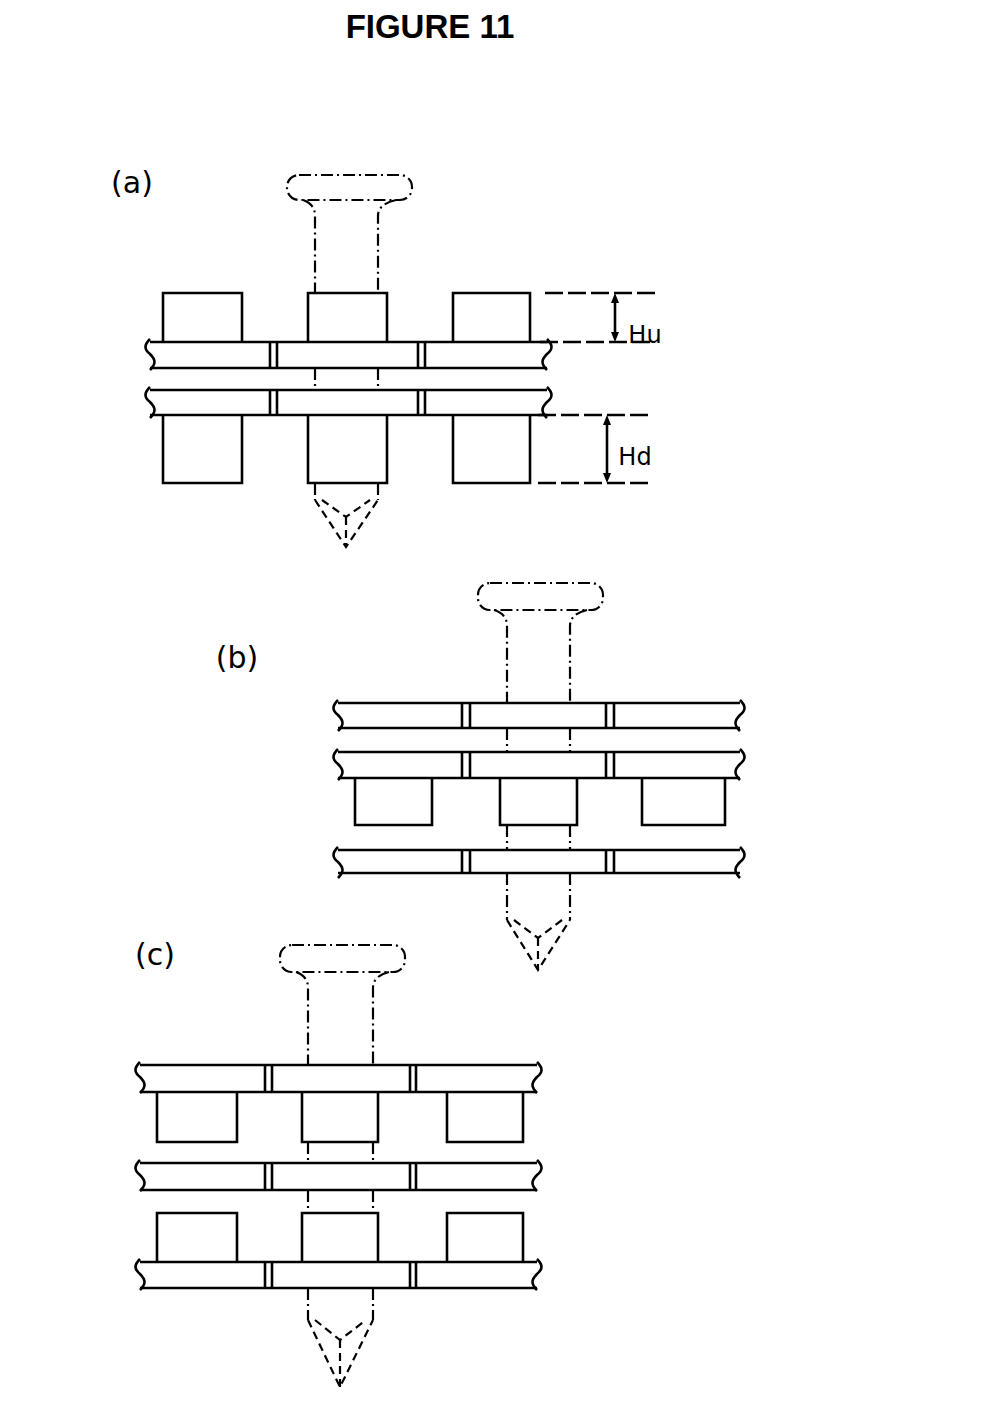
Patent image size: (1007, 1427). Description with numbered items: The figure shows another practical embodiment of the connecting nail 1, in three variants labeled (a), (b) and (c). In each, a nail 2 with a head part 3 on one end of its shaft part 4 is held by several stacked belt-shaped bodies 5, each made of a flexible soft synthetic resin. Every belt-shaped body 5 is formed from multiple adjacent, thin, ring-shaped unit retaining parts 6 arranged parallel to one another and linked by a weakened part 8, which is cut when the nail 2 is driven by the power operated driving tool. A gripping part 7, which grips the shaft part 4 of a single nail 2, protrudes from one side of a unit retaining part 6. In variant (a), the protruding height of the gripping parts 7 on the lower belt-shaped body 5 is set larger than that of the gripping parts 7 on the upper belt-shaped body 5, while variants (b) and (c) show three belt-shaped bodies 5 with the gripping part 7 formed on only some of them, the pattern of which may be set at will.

The connecting nail 1 is at (515, 210).
The nail 2 is at (390, 255).
The head part 3 is at (342, 183).
The shaft part 4 is at (330, 260).
The belt-shaped body 5 is at (203, 275).
The unit retaining part 6 is at (147, 355).
The gripping part 7 is at (190, 318).
The weakened part 8 is at (274, 340).